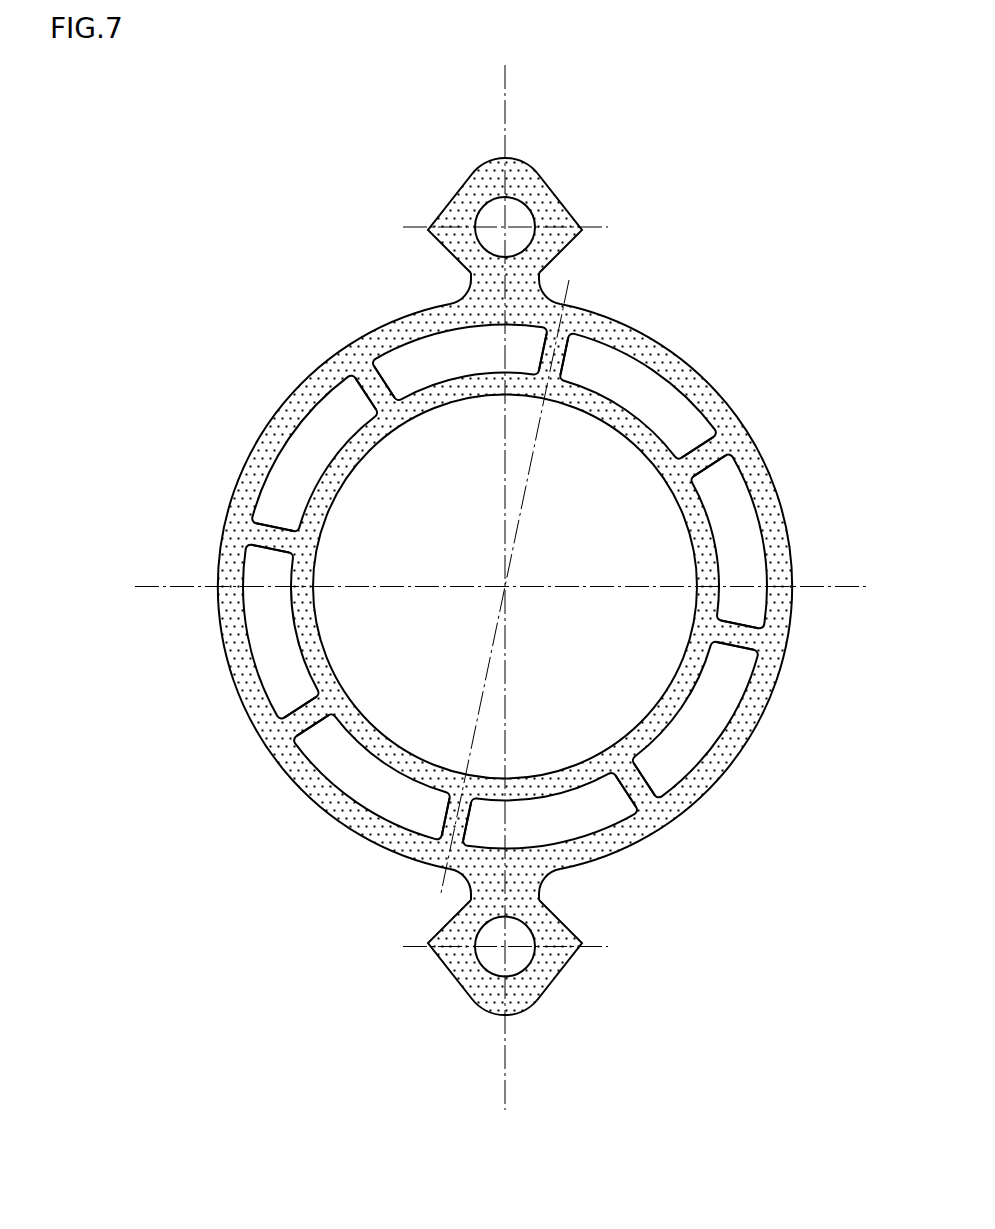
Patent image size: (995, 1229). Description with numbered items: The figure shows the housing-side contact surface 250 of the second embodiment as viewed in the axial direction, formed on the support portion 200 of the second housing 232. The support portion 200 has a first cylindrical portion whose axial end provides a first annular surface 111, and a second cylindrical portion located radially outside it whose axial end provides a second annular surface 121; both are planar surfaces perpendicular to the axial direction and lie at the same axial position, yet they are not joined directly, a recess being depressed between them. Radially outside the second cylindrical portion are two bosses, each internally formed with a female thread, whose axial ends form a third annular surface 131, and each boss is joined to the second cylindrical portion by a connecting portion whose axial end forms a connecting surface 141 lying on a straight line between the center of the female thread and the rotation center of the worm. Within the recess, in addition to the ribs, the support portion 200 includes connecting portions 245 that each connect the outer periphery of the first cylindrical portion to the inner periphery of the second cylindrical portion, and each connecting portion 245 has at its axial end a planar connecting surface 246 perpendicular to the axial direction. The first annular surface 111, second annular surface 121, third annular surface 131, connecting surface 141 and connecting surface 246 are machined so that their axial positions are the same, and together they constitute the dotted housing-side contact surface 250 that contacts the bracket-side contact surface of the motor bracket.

The first annular surface 111 is at (410, 408).
The second annular surface 121 is at (445, 320).
The third annular surface 131 is at (473, 193).
The connecting surface 141 is at (488, 288).
The support portion 200 is at (802, 232).
The second housing 232 is at (796, 112).
The connecting portion 245 is at (565, 363).
The connecting surface 246 is at (557, 350).
The housing-side contact surface 250 is at (688, 387).